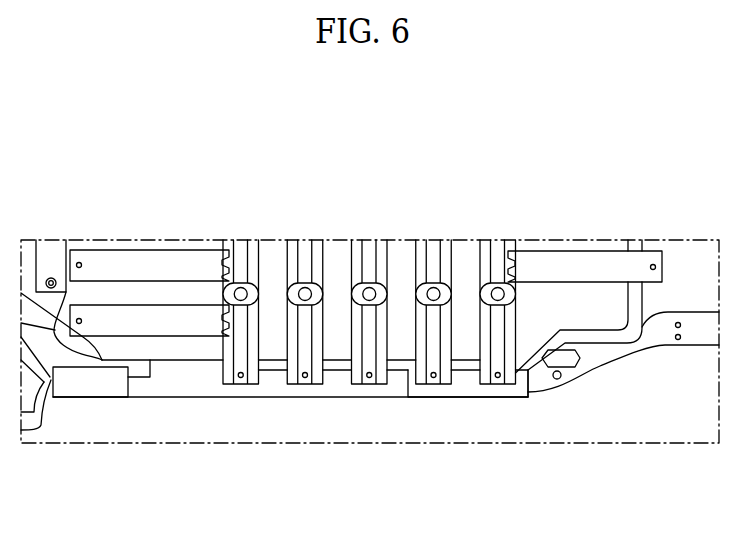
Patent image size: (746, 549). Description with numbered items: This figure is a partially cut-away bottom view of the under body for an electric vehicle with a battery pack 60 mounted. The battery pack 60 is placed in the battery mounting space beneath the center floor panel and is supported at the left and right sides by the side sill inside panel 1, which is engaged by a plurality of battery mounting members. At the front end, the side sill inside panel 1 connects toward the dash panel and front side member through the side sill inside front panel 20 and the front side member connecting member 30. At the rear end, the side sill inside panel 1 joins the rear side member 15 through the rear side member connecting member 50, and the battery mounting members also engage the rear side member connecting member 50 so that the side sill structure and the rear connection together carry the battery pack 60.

The side sill inside panel 1 is at (272, 390).
The rear side member 15 is at (613, 355).
The side sill inside front panel 20 is at (100, 390).
The front side member connecting member 30 is at (60, 350).
The rear side member connecting member 50 is at (468, 390).
The battery pack 60 is at (270, 248).